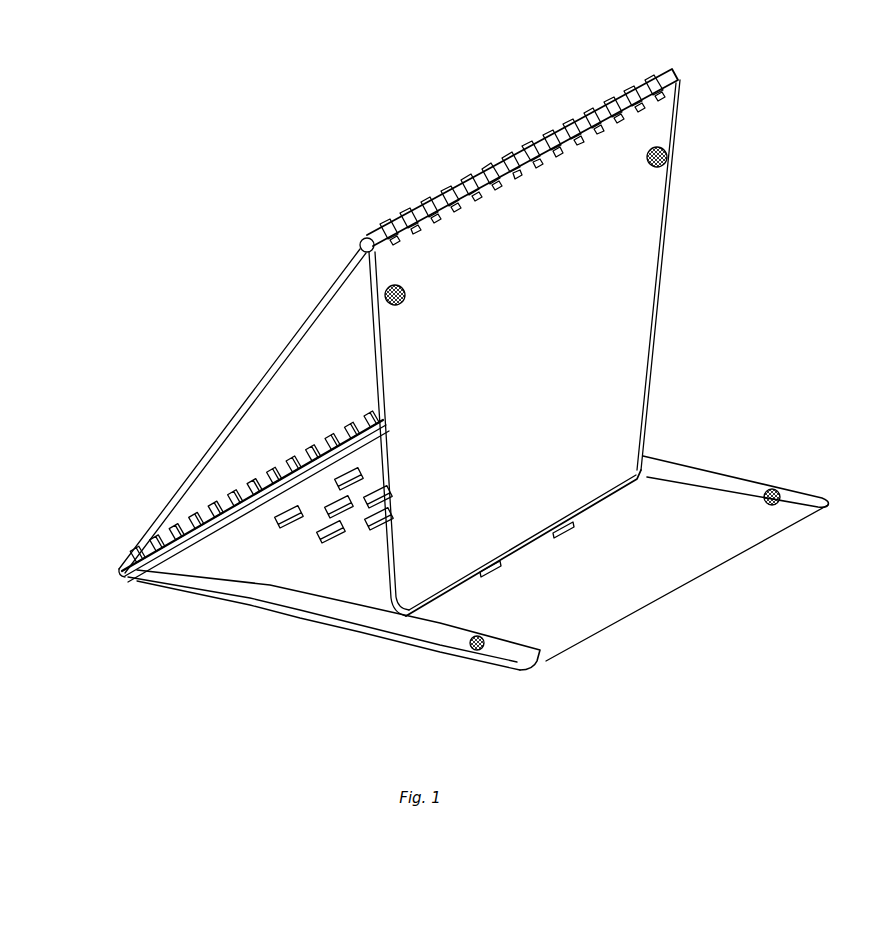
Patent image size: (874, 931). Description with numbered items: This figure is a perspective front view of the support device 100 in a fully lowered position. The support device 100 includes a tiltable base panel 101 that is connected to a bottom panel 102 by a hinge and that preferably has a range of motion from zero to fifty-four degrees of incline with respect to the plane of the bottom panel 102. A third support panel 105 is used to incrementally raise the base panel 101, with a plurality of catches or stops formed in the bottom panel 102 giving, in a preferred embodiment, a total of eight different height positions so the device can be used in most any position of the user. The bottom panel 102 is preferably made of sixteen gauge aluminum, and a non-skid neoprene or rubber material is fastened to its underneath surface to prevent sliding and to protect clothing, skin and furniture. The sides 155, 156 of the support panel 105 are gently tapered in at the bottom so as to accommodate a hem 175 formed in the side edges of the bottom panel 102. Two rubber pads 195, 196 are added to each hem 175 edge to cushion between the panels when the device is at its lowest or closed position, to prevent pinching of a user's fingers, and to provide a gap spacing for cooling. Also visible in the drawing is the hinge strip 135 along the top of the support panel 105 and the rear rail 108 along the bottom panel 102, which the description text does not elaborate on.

The support device 100 is at (305, 102).
The tiltable base panel 101 is at (305, 318).
The bottom panel 102 is at (630, 597).
The third support panel 105 is at (633, 322).
The rear rail 108 is at (140, 540).
The hinge strip 135 is at (563, 132).
The side of support panel 155 is at (650, 422).
The side of support panel 156 is at (390, 598).
The hem 175 is at (290, 593).
The rubber pad 195 is at (470, 652).
The rubber pad 196 is at (777, 503).